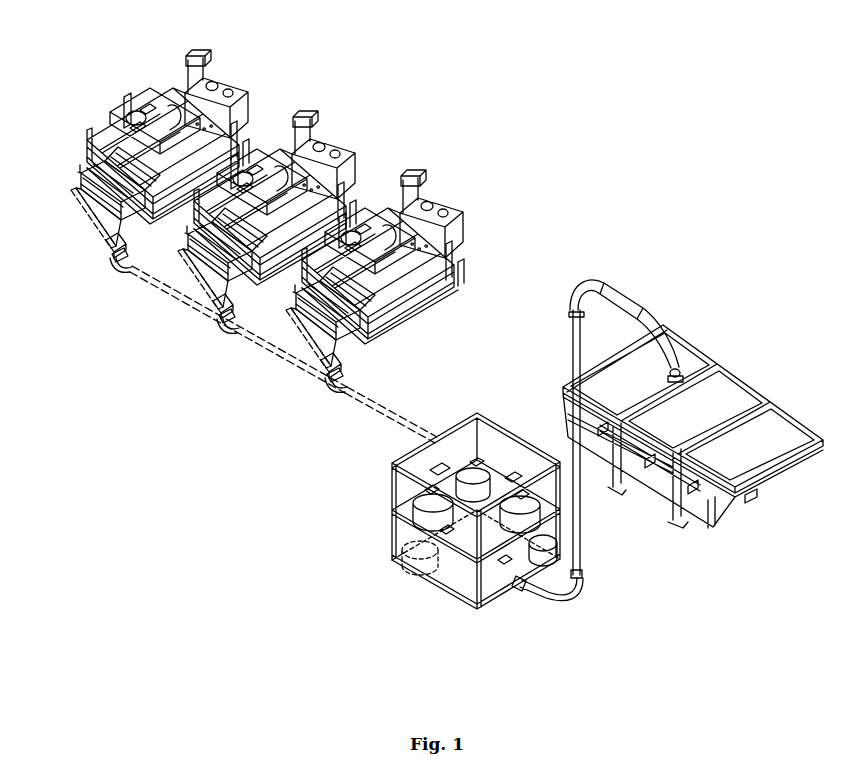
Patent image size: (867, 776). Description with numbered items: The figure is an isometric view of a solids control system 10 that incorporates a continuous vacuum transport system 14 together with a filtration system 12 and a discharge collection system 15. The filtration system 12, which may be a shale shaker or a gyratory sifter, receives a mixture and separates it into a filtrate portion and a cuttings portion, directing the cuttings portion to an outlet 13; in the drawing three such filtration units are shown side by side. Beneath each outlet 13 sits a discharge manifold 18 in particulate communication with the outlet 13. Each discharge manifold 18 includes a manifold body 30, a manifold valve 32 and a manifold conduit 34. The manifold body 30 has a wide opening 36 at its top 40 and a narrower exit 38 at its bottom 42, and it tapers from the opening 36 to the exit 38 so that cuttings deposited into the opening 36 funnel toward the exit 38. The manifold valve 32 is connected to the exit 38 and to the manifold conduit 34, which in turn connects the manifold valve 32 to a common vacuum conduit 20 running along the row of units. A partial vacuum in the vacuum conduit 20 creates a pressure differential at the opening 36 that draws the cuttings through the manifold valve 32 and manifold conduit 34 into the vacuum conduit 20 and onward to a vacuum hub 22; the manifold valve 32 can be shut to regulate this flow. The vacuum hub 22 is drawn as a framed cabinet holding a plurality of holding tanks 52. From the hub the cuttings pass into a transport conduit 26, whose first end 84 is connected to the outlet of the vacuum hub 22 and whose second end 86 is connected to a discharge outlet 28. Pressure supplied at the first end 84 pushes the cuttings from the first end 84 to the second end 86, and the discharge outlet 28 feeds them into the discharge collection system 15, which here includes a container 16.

The solids control system 10 is at (427, 333).
The filtration system 12 is at (223, 80).
The outlet 13 is at (80, 172).
The continuous vacuum transport system 14 is at (255, 225).
The discharge collection system 15 is at (674, 416).
The container 16 is at (688, 366).
The discharge manifold 18 is at (83, 211).
The vacuum conduit 20 is at (265, 358).
The vacuum hub 22 is at (439, 509).
The transport conduit 26 is at (571, 331).
The discharge outlet 28 is at (668, 375).
The manifold body 30 is at (107, 220).
The manifold valve 32 is at (118, 254).
The manifold conduit 34 is at (126, 272).
The opening 36 is at (88, 190).
The exit 38 is at (110, 243).
The top 40 is at (85, 184).
The bottom 42 is at (100, 224).
The holding tanks 52 is at (463, 473).
The first end 84 is at (400, 453).
The second end 86 is at (670, 336).